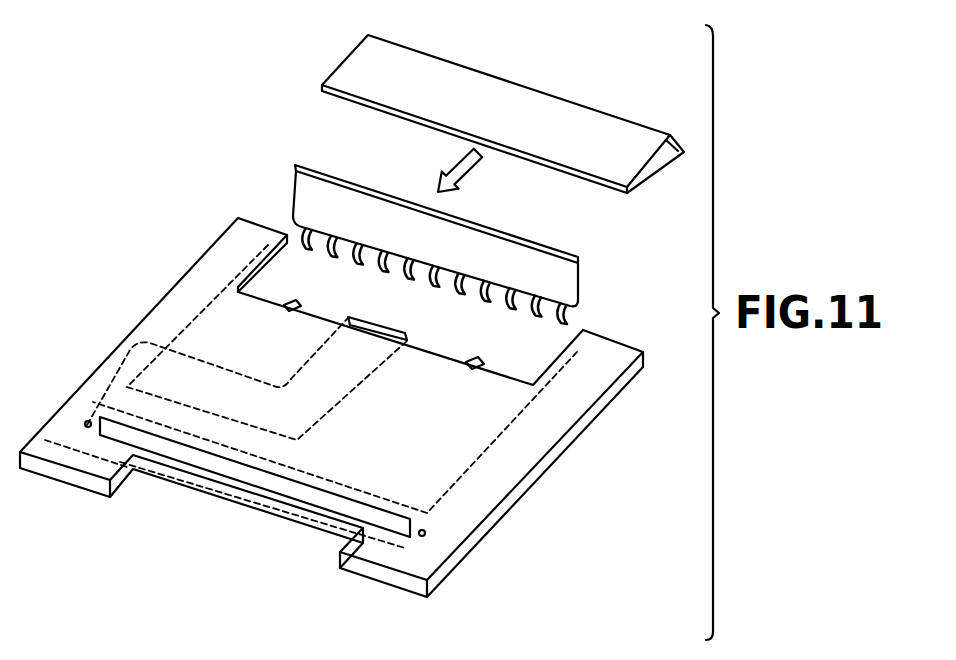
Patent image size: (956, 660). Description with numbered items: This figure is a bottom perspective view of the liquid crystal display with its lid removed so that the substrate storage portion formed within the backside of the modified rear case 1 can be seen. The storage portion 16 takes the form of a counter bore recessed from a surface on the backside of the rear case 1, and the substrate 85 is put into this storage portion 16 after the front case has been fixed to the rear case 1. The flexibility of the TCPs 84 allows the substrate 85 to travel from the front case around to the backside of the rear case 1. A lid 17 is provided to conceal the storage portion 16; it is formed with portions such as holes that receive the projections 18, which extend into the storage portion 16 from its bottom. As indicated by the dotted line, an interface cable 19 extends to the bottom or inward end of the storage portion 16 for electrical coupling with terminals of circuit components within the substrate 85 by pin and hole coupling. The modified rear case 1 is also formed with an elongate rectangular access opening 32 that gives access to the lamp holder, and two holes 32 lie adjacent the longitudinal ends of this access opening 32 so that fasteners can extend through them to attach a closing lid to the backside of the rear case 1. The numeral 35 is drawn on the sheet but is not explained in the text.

The rear case 1 is at (483, 493).
The storage portion 16 is at (530, 363).
The lid 17 is at (597, 131).
The projections 18 is at (286, 311).
The interface cable 19 is at (90, 400).
The access opening 32 is at (445, 537).
The terminal pins 35 is at (87, 428).
The TCPs 84 is at (565, 318).
The substrate 85 is at (580, 246).